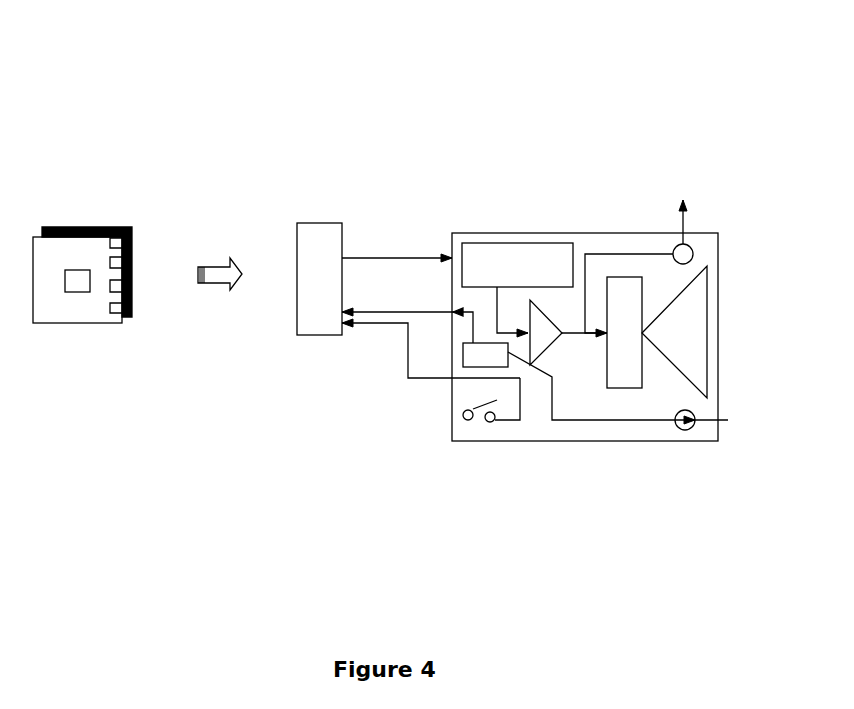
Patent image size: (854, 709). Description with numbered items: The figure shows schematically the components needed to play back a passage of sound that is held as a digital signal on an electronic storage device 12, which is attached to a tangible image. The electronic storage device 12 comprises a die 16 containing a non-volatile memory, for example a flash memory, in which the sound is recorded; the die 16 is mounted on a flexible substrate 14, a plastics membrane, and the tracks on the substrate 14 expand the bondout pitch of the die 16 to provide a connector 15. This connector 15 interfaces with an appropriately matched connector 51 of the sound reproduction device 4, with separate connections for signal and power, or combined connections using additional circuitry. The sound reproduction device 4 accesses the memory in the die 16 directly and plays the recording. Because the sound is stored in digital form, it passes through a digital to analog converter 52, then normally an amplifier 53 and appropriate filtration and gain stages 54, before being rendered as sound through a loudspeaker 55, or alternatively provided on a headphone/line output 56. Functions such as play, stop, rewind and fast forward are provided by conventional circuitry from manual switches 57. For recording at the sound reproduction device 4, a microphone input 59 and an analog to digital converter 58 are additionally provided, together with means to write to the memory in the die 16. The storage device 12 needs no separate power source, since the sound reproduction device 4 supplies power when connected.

The sound reproduction device 4 is at (633, 163).
The electronic storage device 12 is at (120, 202).
The flexible substrate 14 is at (97, 325).
The connector 15 is at (130, 257).
The die 16 is at (70, 290).
The connector 51 is at (315, 325).
The digital to analog converter 52 is at (535, 250).
The amplifier 53 is at (548, 348).
The filtration and gain stages 54 is at (622, 358).
The loudspeaker 55 is at (695, 322).
The headphone/line output 56 is at (695, 212).
The manual switches 57 is at (475, 435).
The analog to digital converter 58 is at (462, 360).
The microphone input 59 is at (733, 433).